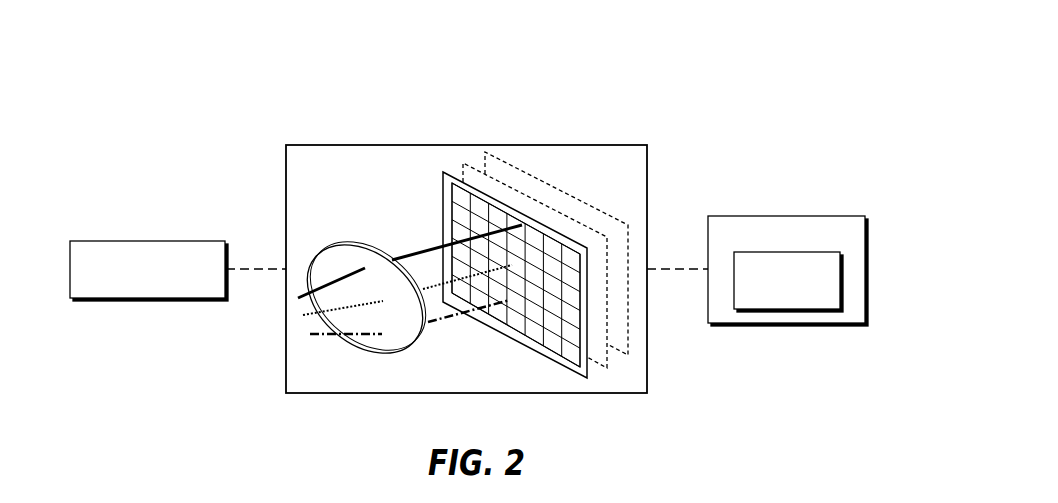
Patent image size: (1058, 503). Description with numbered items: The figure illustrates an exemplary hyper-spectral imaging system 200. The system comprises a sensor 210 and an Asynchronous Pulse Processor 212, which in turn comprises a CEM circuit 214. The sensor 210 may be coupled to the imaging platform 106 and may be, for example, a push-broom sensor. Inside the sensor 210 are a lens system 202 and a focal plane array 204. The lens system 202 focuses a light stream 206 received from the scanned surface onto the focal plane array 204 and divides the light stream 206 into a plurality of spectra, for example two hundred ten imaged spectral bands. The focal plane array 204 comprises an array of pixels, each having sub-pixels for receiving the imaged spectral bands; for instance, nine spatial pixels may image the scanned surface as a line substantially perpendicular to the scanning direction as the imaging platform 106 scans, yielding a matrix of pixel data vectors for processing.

The hyper-spectral imaging system 200 is at (650, 64).
The imaging platform 106 is at (93, 241).
The sensor 210 is at (330, 145).
The lens system 202 is at (352, 243).
The focal plane array 204 is at (441, 190).
The light stream 206 is at (420, 253).
The Asynchronous Pulse Processor (APP) 212 is at (833, 215).
The CEM circuit 214 is at (845, 265).